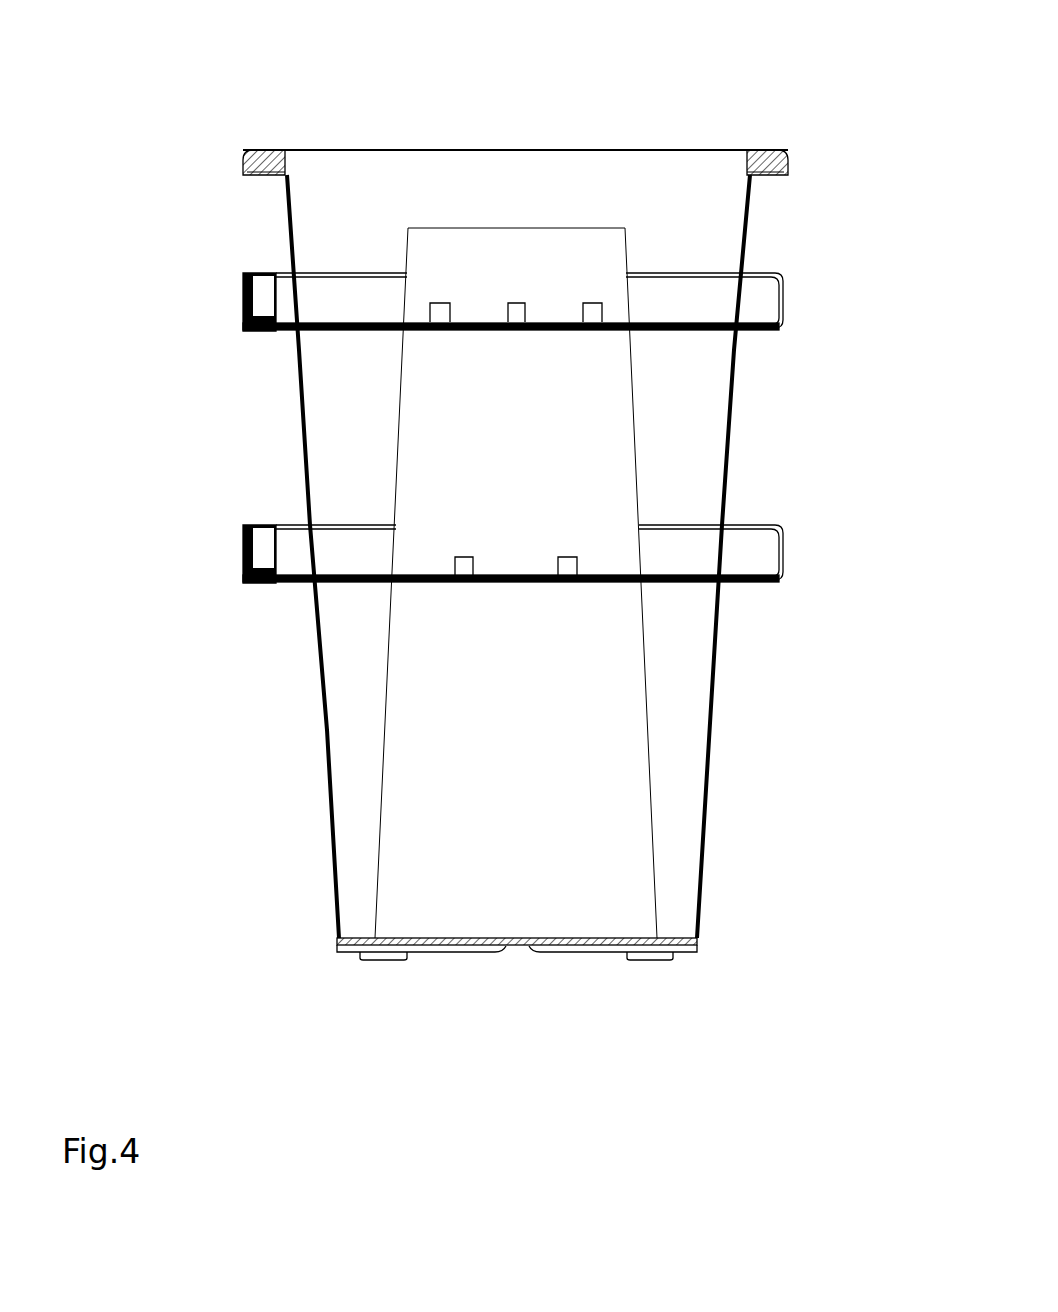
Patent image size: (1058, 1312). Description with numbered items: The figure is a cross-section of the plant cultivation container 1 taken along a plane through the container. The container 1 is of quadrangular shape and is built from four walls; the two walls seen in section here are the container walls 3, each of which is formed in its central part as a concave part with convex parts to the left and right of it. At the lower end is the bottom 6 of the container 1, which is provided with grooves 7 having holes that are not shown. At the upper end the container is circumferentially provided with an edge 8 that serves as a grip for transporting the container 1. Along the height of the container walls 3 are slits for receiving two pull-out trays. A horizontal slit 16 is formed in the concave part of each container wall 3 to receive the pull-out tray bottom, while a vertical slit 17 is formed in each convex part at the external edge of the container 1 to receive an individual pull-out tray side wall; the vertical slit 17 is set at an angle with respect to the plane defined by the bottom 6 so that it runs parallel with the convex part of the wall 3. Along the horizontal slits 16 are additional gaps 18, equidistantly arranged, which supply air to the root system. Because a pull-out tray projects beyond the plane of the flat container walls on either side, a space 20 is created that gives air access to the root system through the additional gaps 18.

The plant cultivation container 1 is at (187, 218).
The container wall 3 is at (530, 164).
The edge 8 is at (787, 135).
The vertical slit 17 is at (638, 289).
The additional gaps 18 is at (452, 565).
The space 20 is at (754, 538).
The horizontal slit 16 is at (352, 593).
The grooves 7 is at (516, 958).
The bottom 6 is at (597, 966).